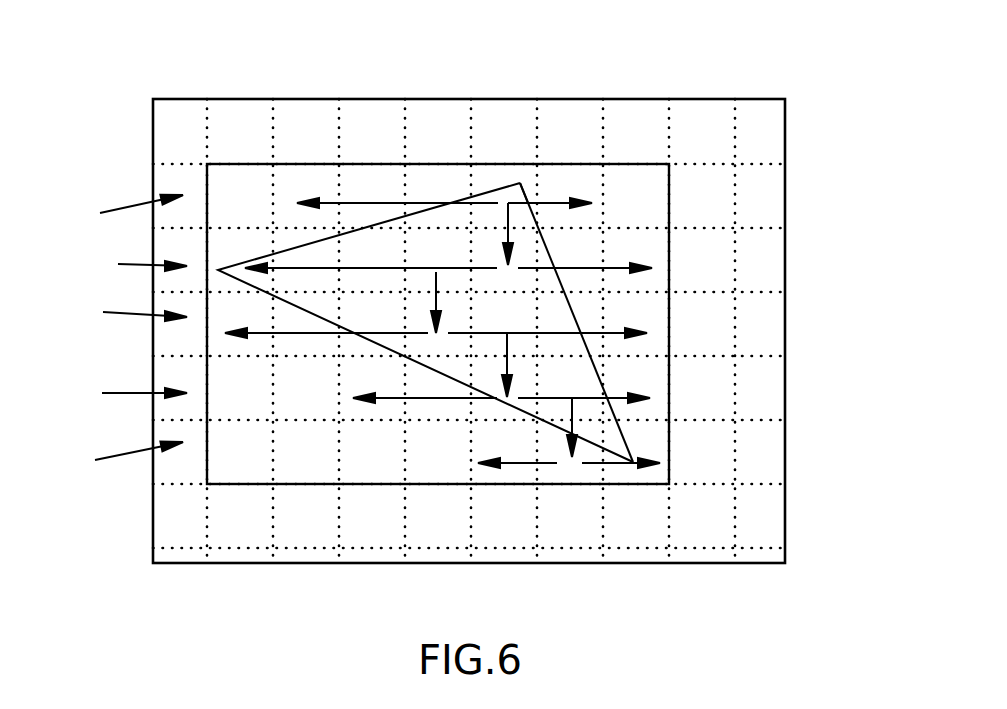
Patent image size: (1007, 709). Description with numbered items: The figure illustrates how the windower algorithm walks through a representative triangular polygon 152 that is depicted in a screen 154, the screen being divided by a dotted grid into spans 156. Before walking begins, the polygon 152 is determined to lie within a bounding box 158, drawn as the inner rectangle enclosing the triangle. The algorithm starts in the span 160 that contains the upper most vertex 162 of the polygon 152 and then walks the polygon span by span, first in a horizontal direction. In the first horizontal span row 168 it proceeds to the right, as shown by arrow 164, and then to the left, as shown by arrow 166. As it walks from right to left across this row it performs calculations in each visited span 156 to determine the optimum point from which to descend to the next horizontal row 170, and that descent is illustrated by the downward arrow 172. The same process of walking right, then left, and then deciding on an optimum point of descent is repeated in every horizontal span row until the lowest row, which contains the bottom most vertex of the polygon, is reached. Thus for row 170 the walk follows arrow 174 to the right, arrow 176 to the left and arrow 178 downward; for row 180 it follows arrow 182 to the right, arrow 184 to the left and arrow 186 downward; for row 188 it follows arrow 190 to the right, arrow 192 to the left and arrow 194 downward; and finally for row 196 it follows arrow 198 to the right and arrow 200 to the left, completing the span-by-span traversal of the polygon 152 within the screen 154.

The polygon 152 is at (572, 310).
The screen 154 is at (681, 98).
The spans 156 is at (530, 117).
The bounding box 158 is at (307, 163).
The span 160 is at (500, 193).
The upper most vertex 162 is at (520, 183).
The arrow 164 is at (540, 203).
The arrow 166 is at (382, 203).
The first horizontal span row 168 is at (115, 213).
The next horizontal row 170 is at (129, 265).
The arrow 172 is at (508, 232).
The arrow 174 is at (620, 268).
The arrow 176 is at (378, 266).
The arrow 178 is at (440, 292).
The row 180 is at (121, 315).
The arrow 182 is at (542, 333).
The arrow 184 is at (390, 332).
The arrow 186 is at (510, 353).
The row 188 is at (122, 395).
The arrow 190 is at (620, 397).
The arrow 192 is at (420, 399).
The arrow 194 is at (573, 417).
The row 196 is at (113, 462).
The arrow 198 is at (597, 464).
The arrow 200 is at (520, 463).